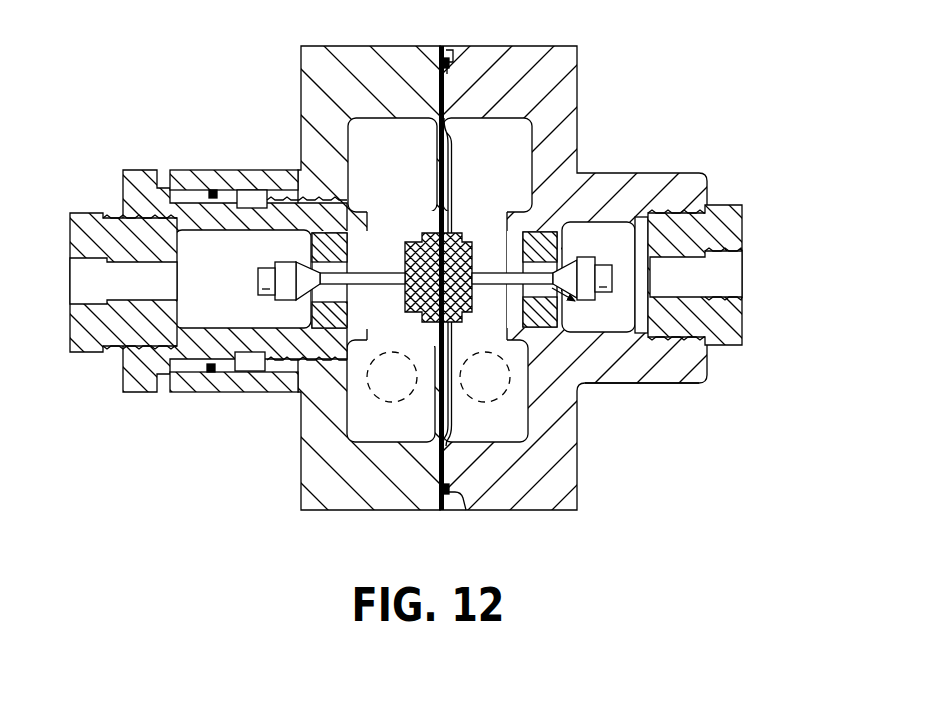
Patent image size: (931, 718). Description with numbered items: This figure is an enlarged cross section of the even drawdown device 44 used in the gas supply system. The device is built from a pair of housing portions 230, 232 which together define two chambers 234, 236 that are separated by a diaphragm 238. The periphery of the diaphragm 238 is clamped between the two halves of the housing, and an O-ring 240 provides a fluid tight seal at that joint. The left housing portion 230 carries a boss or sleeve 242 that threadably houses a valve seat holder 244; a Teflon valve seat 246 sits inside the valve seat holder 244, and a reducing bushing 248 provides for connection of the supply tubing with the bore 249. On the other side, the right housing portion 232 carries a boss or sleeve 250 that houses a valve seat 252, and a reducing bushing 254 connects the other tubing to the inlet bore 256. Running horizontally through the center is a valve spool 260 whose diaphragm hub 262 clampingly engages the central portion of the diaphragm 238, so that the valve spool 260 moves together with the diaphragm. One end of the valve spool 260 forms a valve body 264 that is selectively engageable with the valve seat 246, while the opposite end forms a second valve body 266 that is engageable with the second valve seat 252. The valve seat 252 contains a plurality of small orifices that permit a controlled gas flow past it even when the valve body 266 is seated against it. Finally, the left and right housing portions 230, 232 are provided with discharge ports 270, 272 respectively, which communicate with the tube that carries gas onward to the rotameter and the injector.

The even drawdown device 44 is at (251, 100).
The left housing portion 230 is at (349, 54).
The right housing portion 232 is at (528, 50).
The chamber 234 is at (352, 167).
The chamber 236 is at (461, 167).
The diaphragm 238 is at (448, 204).
The O-ring 240 is at (459, 492).
The boss or sleeve 242 is at (205, 168).
The valve seat holder 244 is at (225, 362).
The Teflon valve seat 246 is at (305, 322).
The reducing bushing 248 is at (83, 337).
The bore 249 is at (185, 279).
The boss or sleeve 250 is at (648, 363).
The valve seat 252 is at (566, 244).
The reducing bushing 254 is at (732, 327).
The inlet bore 256 is at (693, 282).
The valve spool 260 is at (403, 240).
The diaphragm hub 262 is at (358, 352).
The valve body 264 is at (297, 268).
The second valve body 266 is at (611, 279).
The discharge port 270 is at (394, 372).
The discharge port 272 is at (491, 382).